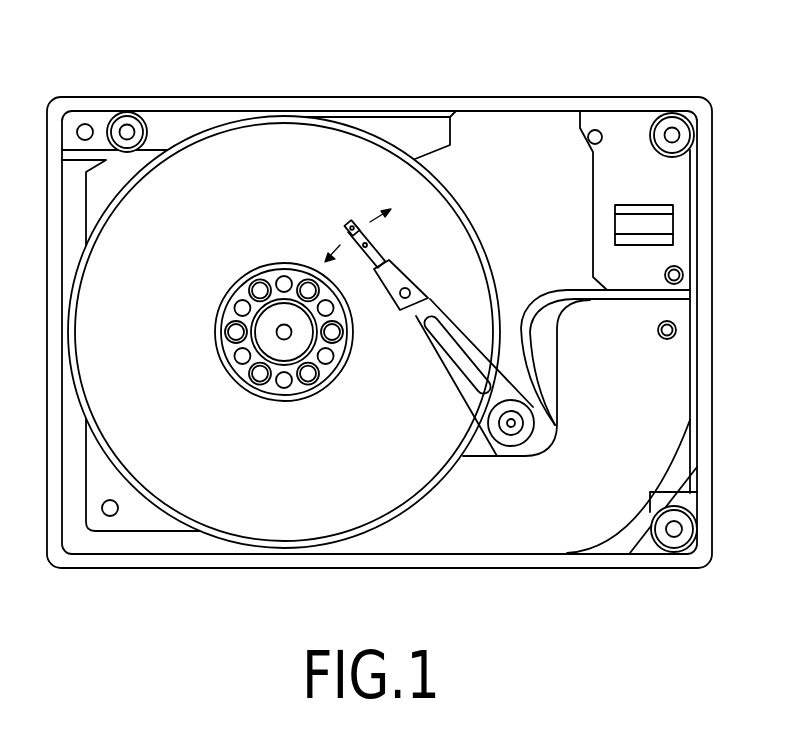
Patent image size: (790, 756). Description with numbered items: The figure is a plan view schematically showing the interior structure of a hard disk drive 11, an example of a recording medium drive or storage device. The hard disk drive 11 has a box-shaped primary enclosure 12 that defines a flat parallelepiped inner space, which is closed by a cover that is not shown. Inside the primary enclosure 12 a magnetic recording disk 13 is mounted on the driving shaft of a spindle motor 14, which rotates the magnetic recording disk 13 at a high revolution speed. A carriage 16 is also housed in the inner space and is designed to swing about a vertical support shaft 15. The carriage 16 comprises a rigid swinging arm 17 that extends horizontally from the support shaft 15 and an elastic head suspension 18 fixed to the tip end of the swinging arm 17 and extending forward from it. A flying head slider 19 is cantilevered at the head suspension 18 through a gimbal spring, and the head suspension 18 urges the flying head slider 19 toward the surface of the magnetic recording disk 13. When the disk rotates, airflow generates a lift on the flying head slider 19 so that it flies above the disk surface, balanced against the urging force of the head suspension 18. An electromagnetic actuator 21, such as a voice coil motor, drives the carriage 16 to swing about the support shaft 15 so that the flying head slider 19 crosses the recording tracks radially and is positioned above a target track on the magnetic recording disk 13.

The hard disk drive 11 is at (437, 62).
The primary enclosure 12 is at (282, 569).
The magnetic recording disk 13 is at (468, 237).
The spindle motor 14 is at (260, 342).
The vertical support shaft 15 is at (515, 428).
The carriage 16 is at (452, 408).
The swinging arm 17 is at (447, 371).
The elastic head suspension 18 is at (379, 253).
The flying head slider 19 is at (346, 227).
The electromagnetic actuator 21 is at (615, 547).